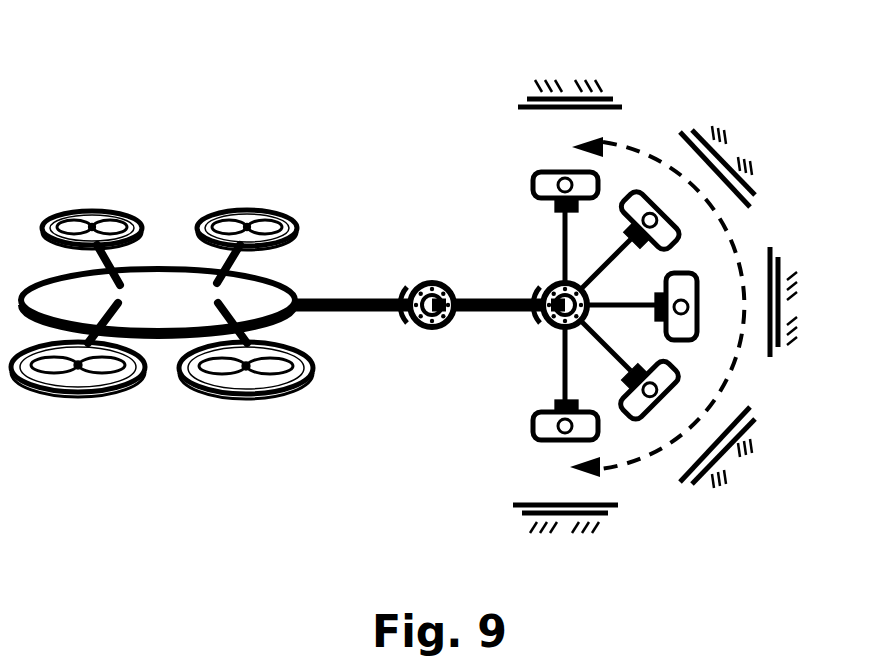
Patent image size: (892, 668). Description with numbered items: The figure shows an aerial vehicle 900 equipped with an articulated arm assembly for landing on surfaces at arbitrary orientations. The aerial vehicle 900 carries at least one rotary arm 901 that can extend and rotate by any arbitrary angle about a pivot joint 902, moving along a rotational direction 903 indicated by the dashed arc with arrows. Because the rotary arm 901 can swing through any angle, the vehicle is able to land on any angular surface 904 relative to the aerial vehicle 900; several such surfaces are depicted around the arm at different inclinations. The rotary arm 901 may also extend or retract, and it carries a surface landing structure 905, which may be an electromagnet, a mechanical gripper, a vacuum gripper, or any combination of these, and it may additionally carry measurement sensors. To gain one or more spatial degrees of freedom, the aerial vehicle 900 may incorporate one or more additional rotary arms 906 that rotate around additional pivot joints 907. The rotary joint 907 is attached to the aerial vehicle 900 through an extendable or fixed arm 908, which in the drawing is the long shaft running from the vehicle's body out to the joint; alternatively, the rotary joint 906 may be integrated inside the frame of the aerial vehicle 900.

The aerial vehicle 900 is at (163, 352).
The rotary arm 901 is at (640, 300).
The pivot joint 902 is at (535, 333).
The rotational direction 903 is at (553, 143).
The angular surface 904 is at (563, 60).
The surface landing structure 905 is at (520, 193).
The additional rotary arm 906 is at (492, 283).
The additional pivot joint 907 is at (407, 333).
The fixed arm 908 is at (362, 288).